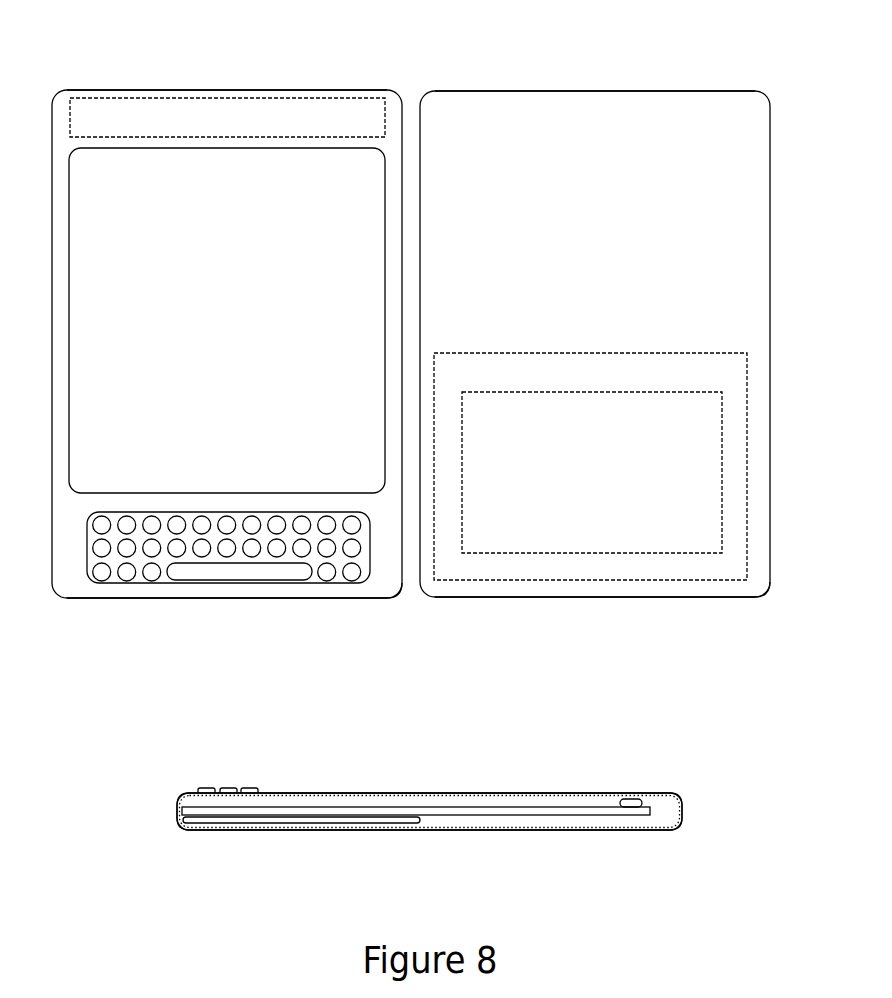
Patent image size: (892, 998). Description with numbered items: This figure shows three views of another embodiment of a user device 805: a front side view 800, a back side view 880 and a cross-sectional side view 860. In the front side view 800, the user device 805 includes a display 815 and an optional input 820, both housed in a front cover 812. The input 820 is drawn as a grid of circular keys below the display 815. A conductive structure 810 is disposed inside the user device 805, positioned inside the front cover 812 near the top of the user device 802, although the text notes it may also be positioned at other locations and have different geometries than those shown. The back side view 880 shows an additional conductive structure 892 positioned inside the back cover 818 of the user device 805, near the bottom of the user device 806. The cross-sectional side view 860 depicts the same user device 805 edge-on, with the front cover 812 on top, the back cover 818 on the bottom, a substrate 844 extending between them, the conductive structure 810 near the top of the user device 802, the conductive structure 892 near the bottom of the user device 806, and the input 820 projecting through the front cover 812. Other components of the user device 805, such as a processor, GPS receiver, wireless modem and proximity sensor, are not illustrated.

The front side view 800 is at (183, 28).
The user device 805 is at (411, 421).
The top of user device 802 is at (415, 451).
The conductive structure 810 is at (305, 124).
The display 815 is at (258, 326).
The input 820 is at (102, 585).
The bottom of the user device 806 is at (410, 713).
The front cover 812 is at (380, 598).
The back side view 880 is at (555, 28).
The additional conductive structure 892 is at (668, 380).
The back cover 818 is at (743, 597).
The cross-sectional side view 860 is at (502, 722).
The substrate 844 is at (537, 817).